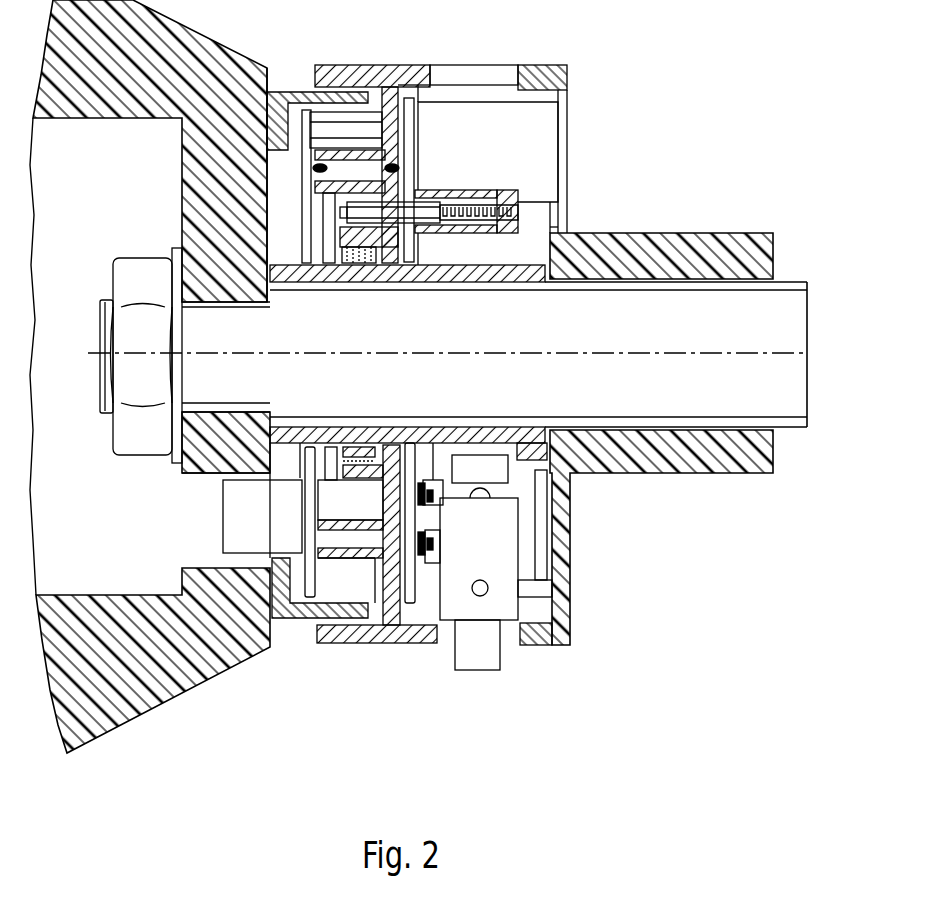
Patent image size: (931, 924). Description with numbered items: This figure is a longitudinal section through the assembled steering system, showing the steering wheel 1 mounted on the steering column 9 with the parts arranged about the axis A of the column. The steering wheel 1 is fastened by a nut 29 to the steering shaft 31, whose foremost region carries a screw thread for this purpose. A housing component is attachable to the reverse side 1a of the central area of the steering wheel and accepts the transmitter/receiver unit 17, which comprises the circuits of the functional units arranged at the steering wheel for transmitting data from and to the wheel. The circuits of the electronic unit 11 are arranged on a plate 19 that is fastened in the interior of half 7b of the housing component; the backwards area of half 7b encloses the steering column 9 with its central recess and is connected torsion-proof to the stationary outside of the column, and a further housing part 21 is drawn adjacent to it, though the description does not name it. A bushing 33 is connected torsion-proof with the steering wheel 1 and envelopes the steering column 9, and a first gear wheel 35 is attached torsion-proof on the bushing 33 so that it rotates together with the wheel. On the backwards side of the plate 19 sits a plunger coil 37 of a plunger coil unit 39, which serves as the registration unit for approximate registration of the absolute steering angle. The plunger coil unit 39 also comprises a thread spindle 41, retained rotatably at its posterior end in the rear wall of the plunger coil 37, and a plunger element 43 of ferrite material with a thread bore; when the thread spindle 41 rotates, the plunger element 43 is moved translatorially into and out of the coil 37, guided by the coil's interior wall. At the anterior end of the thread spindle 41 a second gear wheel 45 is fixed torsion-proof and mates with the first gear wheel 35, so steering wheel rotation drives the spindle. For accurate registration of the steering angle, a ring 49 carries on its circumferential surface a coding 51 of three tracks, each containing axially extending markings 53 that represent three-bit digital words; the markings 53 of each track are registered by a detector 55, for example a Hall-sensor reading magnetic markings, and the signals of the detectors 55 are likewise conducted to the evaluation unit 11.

The steering wheel 1 is at (177, 687).
The reverse side 1a is at (272, 68).
The half of housing component 7b is at (572, 70).
The steering column 9 is at (808, 371).
The electronic unit 11 is at (440, 620).
The transmitter/receiver unit 17 is at (318, 590).
The plate 19 is at (426, 612).
The housing 21 is at (375, 67).
The nut 29 is at (138, 447).
The steering shaft 31 is at (100, 330).
The bushing 33 is at (477, 273).
The first gear wheel 35 is at (328, 246).
The plunger coil 37 is at (500, 190).
The plunger coil unit 39 is at (455, 188).
The thread spindle 41 is at (483, 212).
The plunger element 43 is at (397, 187).
The second gear wheel 45 is at (330, 213).
The ring 49 is at (376, 443).
The coding 51 is at (350, 447).
The markings 53 is at (366, 264).
The detector 55 is at (345, 264).
The axis A is at (680, 349).